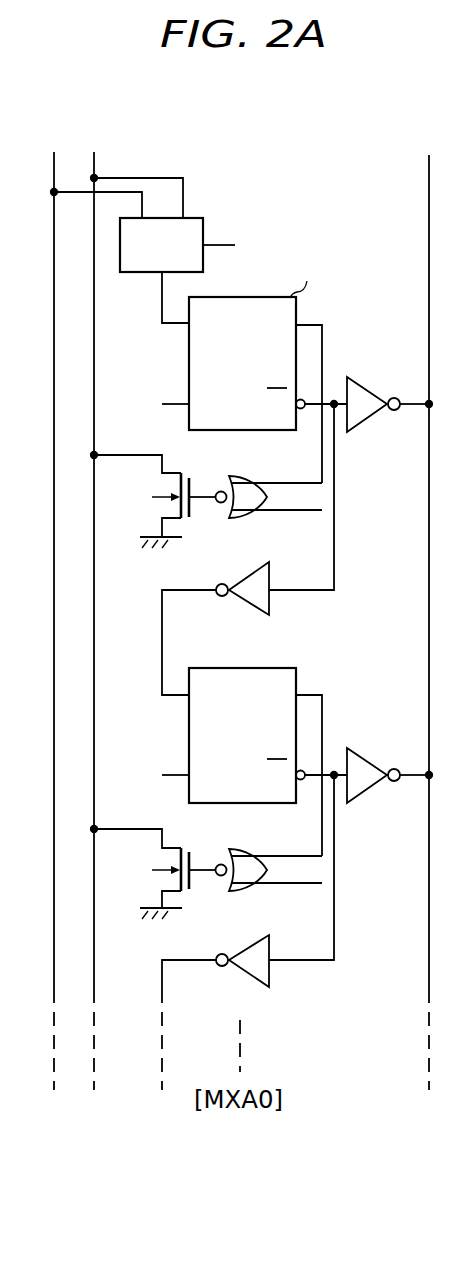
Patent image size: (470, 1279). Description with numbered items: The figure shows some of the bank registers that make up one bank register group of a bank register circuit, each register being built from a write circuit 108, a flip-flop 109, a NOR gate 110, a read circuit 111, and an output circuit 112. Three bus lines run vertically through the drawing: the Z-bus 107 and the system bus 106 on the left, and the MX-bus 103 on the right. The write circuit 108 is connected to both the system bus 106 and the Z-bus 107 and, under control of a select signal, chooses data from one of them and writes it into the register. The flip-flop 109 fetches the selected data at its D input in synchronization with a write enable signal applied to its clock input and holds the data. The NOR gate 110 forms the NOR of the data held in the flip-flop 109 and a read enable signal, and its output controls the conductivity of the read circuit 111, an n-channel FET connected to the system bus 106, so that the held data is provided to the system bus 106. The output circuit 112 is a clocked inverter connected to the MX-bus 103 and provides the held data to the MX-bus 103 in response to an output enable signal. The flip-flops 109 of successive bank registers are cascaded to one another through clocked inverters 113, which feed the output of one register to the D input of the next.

The MX-bus 103 is at (429, 160).
The system bus (M-bus) 106 is at (135, 140).
The Z-bus 107 is at (55, 162).
The write circuit 108 is at (203, 216).
The flip-flop 109 is at (245, 431).
The NOR gate 110 is at (232, 481).
The read circuit 111 is at (183, 474).
The output circuit 112 is at (366, 422).
The clocked inverter 113 is at (270, 610).